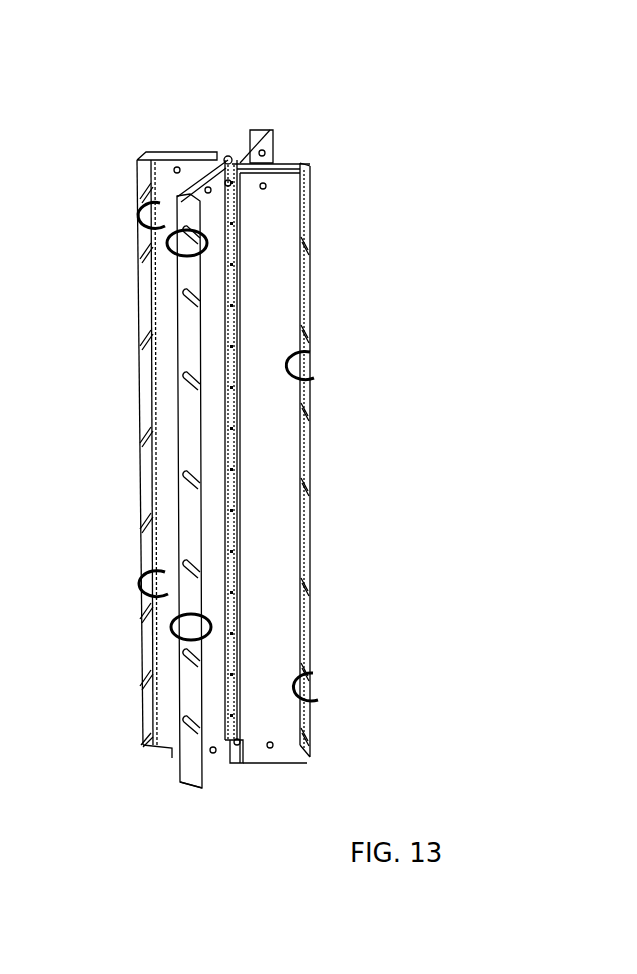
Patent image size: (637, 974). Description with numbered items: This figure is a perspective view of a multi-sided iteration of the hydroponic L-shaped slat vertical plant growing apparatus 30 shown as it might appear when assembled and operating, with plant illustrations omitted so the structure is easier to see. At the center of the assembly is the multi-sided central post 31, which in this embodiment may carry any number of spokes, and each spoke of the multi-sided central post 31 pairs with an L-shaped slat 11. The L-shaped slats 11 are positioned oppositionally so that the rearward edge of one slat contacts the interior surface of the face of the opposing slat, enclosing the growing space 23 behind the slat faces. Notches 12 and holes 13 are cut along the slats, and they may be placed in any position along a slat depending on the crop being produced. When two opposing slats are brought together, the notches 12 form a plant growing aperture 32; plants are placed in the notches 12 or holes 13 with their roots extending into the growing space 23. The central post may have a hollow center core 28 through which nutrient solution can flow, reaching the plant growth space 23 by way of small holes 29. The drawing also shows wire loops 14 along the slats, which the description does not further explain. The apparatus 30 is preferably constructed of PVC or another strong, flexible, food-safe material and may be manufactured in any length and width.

The L-shaped slat 11 is at (281, 145).
The notch 12 is at (202, 385).
The hole 13 is at (215, 192).
The wire loops 14 is at (133, 585).
The growing space 23 is at (201, 171).
The hollow center core 28 is at (226, 157).
The small hole 29 is at (226, 594).
The multi-sided hydroponic L-shaped slat vertical plant growing apparatus 30 is at (323, 270).
The multi-sided central post 31 is at (160, 172).
The plant growing aperture 32 is at (185, 378).